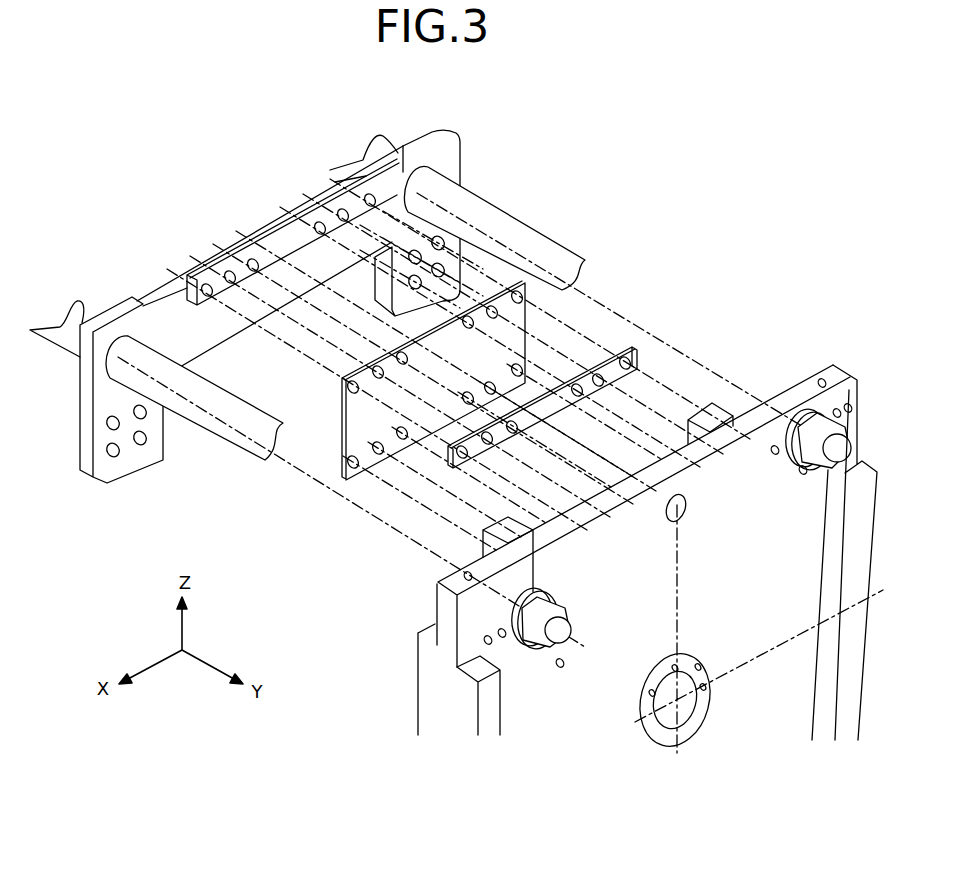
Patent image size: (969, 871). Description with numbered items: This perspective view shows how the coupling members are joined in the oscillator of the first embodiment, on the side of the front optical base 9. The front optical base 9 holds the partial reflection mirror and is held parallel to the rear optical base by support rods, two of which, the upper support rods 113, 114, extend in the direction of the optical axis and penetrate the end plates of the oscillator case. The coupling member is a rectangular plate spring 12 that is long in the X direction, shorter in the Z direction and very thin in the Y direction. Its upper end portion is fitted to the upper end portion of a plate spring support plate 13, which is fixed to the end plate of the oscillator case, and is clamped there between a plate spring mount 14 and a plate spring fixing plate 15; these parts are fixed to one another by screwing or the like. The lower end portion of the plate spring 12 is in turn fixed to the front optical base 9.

The front optical base 9 is at (848, 365).
The plate spring 12 is at (548, 320).
The plate spring support plate 13 is at (449, 127).
The plate spring mount 14 is at (265, 240).
The plate spring fixing plate 15 is at (638, 355).
The upper support rod 113 is at (203, 447).
The upper support rod 114 is at (497, 203).